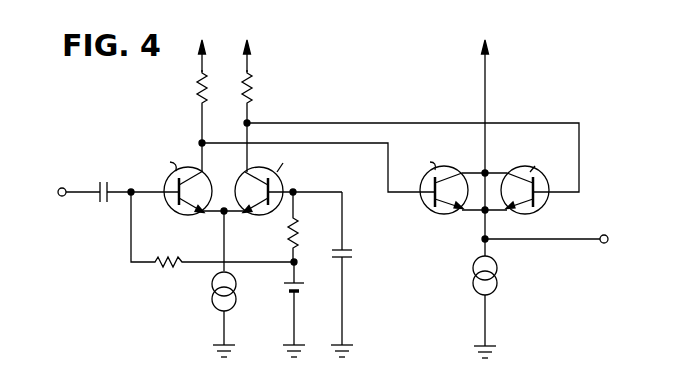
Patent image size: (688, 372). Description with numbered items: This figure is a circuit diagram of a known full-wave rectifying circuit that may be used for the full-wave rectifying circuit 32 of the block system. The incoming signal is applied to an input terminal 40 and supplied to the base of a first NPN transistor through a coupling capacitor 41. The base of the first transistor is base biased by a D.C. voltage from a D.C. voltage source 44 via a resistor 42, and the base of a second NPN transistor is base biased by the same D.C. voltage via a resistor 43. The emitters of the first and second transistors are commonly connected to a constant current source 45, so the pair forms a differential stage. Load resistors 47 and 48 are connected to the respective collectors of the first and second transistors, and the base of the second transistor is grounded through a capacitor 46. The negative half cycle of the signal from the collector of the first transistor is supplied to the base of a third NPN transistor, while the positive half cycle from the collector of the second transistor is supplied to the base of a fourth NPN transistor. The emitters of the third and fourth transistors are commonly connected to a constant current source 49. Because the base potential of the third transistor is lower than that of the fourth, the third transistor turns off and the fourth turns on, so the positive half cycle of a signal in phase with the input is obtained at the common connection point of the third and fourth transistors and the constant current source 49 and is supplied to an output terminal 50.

The full-wave rectifying circuit 32 is at (401, 82).
The input terminal 40 is at (59, 188).
The coupling capacitor 41 is at (104, 180).
The resistor 42 is at (174, 258).
The resistor 43 is at (283, 238).
The D.C. voltage source 44 is at (287, 286).
The constant current source 45 is at (211, 300).
The capacitor 46 is at (355, 258).
The load resistor 47 is at (196, 86).
The load resistor 48 is at (253, 88).
The constant current source 49 is at (497, 287).
The output terminal 50 is at (608, 234).